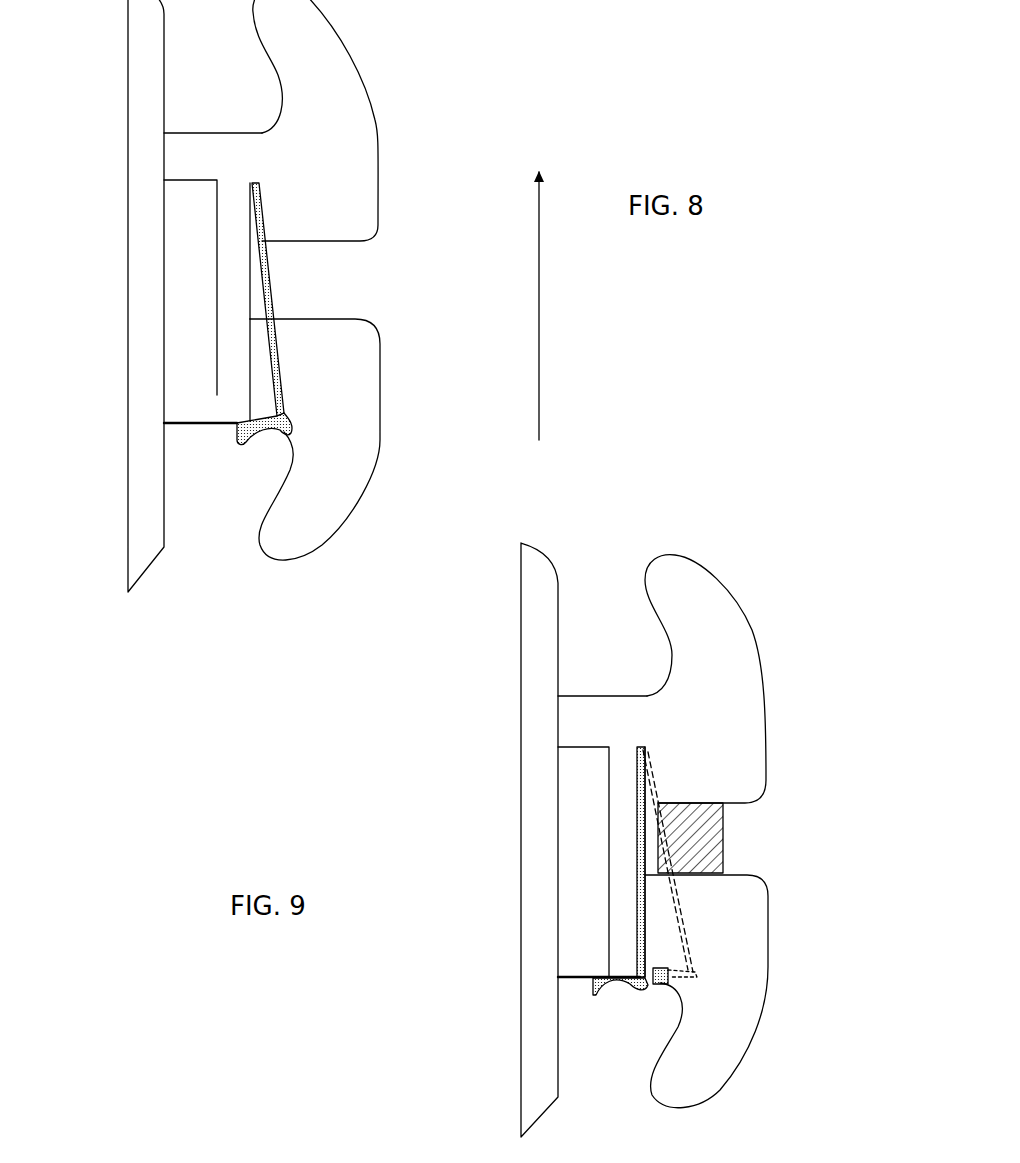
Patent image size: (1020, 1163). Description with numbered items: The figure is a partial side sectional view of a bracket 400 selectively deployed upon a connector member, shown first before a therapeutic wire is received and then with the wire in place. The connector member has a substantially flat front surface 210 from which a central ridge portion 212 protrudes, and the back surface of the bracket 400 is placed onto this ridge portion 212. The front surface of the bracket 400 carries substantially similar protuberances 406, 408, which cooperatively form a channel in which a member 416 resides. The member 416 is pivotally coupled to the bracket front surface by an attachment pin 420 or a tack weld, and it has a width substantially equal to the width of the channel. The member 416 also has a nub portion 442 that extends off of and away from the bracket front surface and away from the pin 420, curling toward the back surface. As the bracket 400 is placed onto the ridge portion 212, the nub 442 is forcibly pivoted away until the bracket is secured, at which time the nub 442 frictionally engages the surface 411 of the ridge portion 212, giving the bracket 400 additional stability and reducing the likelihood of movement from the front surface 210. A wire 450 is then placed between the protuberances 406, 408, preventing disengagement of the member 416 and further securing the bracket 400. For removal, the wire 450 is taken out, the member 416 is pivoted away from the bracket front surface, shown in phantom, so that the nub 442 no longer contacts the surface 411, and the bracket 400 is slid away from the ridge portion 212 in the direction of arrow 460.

In FIG. 8, the front surface 210 is at (147, 58).
In FIG. 9, the front surface 210 is at (540, 623).
In FIG. 8, the central ridge portion 212 is at (182, 277).
In FIG. 9, the central ridge portion 212 is at (573, 835).
In FIG. 8, the bracket 400 is at (445, 116).
In FIG. 9, the bracket 400 is at (790, 593).
In FIG. 8, the protuberance 406 is at (343, 101).
In FIG. 9, the protuberance 406 is at (733, 663).
In FIG. 8, the protuberance 408 is at (356, 476).
In FIG. 9, the protuberance 408 is at (748, 1029).
In FIG. 8, the surface of the ridge member 411 is at (182, 423).
In FIG. 9, the surface of the ridge member 411 is at (573, 980).
In FIG. 8, the member 416 is at (270, 272).
In FIG. 9, the member 416 is at (657, 807).
In FIG. 8, the attachment pin 420 is at (253, 183).
In FIG. 9, the attachment pin 420 is at (643, 747).
In FIG. 8, the nub portion 442 is at (237, 440).
In FIG. 9, the nub portion 442 is at (618, 987).
In FIG. 9, the wire 450 is at (723, 843).
In FIG. 8, the arrow 460 is at (539, 305).